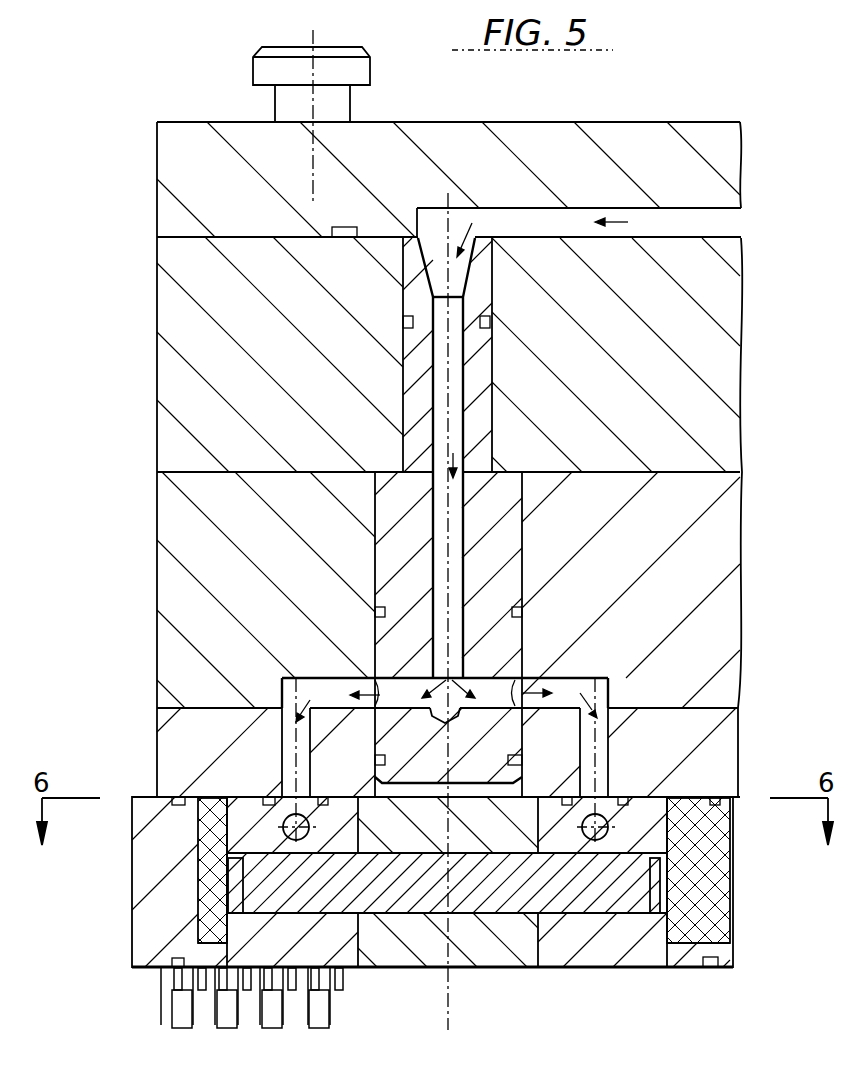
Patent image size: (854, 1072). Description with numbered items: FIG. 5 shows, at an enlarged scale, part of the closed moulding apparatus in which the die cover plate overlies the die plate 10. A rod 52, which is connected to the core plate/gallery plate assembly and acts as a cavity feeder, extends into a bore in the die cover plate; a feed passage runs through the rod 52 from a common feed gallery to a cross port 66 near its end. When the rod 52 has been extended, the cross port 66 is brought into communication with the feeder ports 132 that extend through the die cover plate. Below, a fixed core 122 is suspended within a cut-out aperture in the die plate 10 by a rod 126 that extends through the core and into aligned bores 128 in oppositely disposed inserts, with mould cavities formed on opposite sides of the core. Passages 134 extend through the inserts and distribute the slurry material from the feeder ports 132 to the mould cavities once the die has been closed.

The die plate 10 is at (131, 870).
The rod 52 is at (510, 542).
The cross port 66 is at (493, 690).
The fixed core 122 is at (468, 840).
The rod 126 is at (525, 893).
The bore 128 is at (255, 862).
The feeder port 132 is at (605, 730).
The passage 134 is at (288, 806).